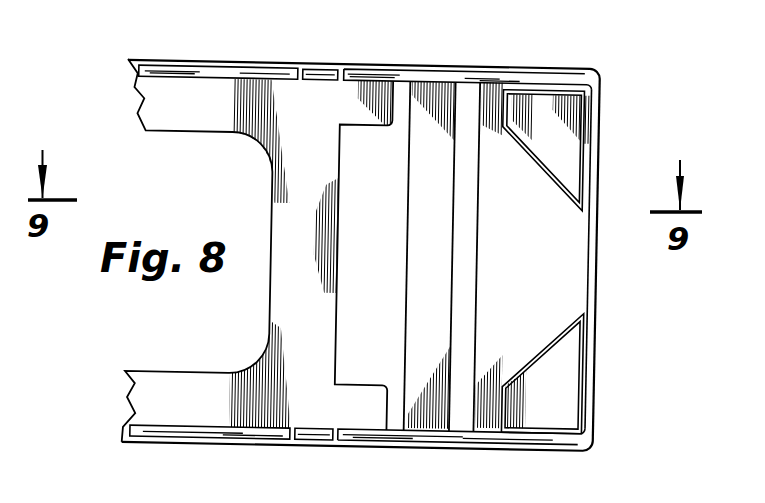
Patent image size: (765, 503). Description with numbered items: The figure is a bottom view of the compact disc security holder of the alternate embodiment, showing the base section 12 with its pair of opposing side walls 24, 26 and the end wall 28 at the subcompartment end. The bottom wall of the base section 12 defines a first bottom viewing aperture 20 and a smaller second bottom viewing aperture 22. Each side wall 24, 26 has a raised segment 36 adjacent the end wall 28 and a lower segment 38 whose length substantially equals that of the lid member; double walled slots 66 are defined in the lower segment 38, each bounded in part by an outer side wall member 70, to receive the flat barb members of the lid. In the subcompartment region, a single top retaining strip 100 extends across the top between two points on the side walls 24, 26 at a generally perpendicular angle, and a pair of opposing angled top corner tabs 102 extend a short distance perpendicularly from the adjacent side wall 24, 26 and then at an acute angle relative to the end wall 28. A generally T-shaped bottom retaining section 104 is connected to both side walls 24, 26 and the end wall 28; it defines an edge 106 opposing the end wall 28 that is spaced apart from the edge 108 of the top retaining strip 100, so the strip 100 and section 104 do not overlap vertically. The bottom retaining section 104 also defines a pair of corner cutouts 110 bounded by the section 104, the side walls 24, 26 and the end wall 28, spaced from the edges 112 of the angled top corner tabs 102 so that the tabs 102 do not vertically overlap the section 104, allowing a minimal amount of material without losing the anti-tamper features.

The base section 12 is at (610, 113).
The first bottom viewing aperture 20 is at (273, 180).
The second bottom viewing aperture 22 is at (338, 333).
The side wall 24 is at (485, 65).
The side wall 26 is at (408, 446).
The end wall 28 is at (598, 271).
The raised segment 36 is at (549, 441).
The lower segment 38 is at (210, 70).
The double walled slot 66 is at (323, 70).
The outer side wall member 70 is at (590, 244).
The top retaining strip 100 is at (408, 174).
The angled top corner tab 102 is at (537, 103).
The bottom retaining section 104 is at (538, 273).
The edge 106 is at (473, 286).
The edge 108 is at (460, 220).
The corner cutout 110 is at (550, 180).
The edge 112 is at (552, 164).